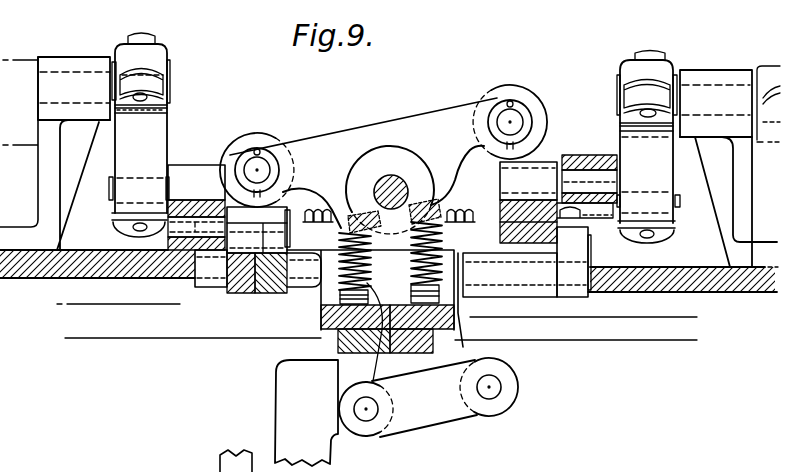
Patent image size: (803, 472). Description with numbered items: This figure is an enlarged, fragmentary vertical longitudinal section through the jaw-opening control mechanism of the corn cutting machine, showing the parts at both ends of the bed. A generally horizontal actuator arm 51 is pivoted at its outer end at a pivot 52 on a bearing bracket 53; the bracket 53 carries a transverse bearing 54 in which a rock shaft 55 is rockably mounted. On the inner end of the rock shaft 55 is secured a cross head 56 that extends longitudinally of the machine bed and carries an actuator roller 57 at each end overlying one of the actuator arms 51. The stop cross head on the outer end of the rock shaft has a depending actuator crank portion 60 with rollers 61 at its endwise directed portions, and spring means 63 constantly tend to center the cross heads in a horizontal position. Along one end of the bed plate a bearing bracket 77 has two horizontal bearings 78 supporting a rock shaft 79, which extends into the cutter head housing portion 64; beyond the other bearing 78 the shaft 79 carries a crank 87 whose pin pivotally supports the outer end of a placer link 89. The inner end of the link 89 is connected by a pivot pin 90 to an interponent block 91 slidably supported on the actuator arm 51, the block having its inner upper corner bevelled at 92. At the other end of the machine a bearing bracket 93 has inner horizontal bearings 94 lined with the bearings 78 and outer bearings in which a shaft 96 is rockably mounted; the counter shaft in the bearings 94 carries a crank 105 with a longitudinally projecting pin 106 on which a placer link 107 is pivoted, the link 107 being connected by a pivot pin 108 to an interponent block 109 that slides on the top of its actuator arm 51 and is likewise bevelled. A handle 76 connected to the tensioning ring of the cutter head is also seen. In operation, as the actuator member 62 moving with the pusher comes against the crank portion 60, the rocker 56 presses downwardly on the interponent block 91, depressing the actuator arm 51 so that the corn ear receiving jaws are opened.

The actuator arm 51 is at (282, 280).
The pivot 52 is at (210, 272).
The bearing bracket 53 is at (477, 232).
The transverse bearing 54 is at (356, 160).
The rock shaft 55 is at (393, 176).
The cross head 56 is at (452, 121).
The actuator roller 57 is at (270, 125).
The actuator crank portion 60 is at (466, 346).
The rollers 61 is at (367, 435).
The actuator member 62 is at (283, 397).
The spring means 63 is at (407, 292).
The housing portion 64 is at (103, 470).
The handle 76 is at (222, 462).
The bearing bracket 77 is at (37, 256).
The horizontal bearings 78 is at (51, 64).
The rock shaft 79 is at (75, 82).
The crank 87 is at (158, 135).
The placer link 89 is at (191, 175).
The pivot pin 90 is at (207, 273).
The interponent block 91 is at (243, 240).
The bevelled corner portion 92 is at (270, 256).
The bearing bracket 93 is at (748, 262).
The inner horizontal bearings 94 is at (723, 73).
The shaft 96 is at (688, 88).
The crank 105 is at (638, 150).
The pin 106 is at (677, 207).
The placer link 107 is at (612, 167).
The pivot pin 108 is at (612, 194).
The interponent block 109 is at (536, 180).